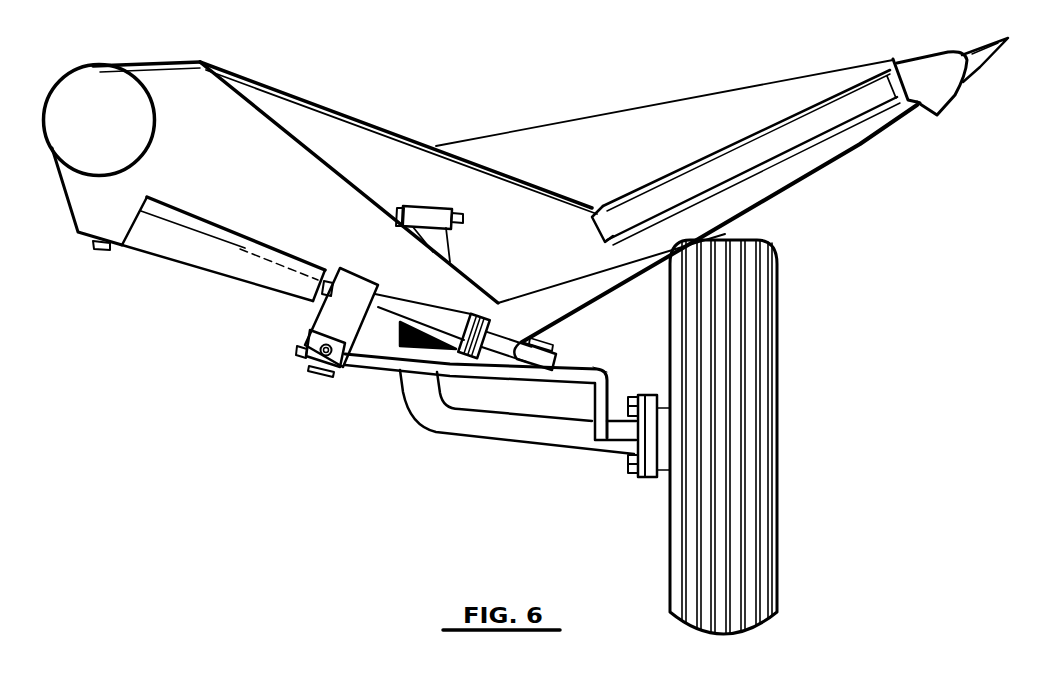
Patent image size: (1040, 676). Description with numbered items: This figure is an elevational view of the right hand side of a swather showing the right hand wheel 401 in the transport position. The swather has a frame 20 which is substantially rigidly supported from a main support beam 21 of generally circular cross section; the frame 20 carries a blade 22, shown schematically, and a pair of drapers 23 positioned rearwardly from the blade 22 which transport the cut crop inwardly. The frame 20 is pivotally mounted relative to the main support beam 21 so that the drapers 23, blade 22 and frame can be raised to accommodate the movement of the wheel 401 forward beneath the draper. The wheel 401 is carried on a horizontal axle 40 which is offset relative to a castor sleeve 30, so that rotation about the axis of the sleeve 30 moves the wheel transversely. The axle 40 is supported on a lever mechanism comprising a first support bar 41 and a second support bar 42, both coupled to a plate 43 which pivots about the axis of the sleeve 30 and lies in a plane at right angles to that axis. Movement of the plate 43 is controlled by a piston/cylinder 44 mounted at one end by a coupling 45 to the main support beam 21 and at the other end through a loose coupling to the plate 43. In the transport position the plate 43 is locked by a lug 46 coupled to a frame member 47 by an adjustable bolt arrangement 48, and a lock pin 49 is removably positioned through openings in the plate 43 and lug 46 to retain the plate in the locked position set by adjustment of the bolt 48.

The frame 20 is at (786, 181).
The main support beam 21 is at (72, 110).
The blade 22 is at (977, 66).
The drapers 23 is at (679, 184).
The castor sleeve 30 is at (450, 212).
The axle 40 is at (658, 456).
The right hand wheel 401 is at (690, 517).
The first support bar 41 is at (478, 428).
The second support bar 42 is at (606, 376).
The plate 43 is at (296, 351).
The piston/cylinder 44 is at (194, 258).
The coupling 45 is at (73, 193).
The lug 46 is at (310, 362).
The frame member 47 is at (318, 308).
The adjustable bolt arrangement 48 is at (329, 345).
The lock pin 49 is at (326, 378).